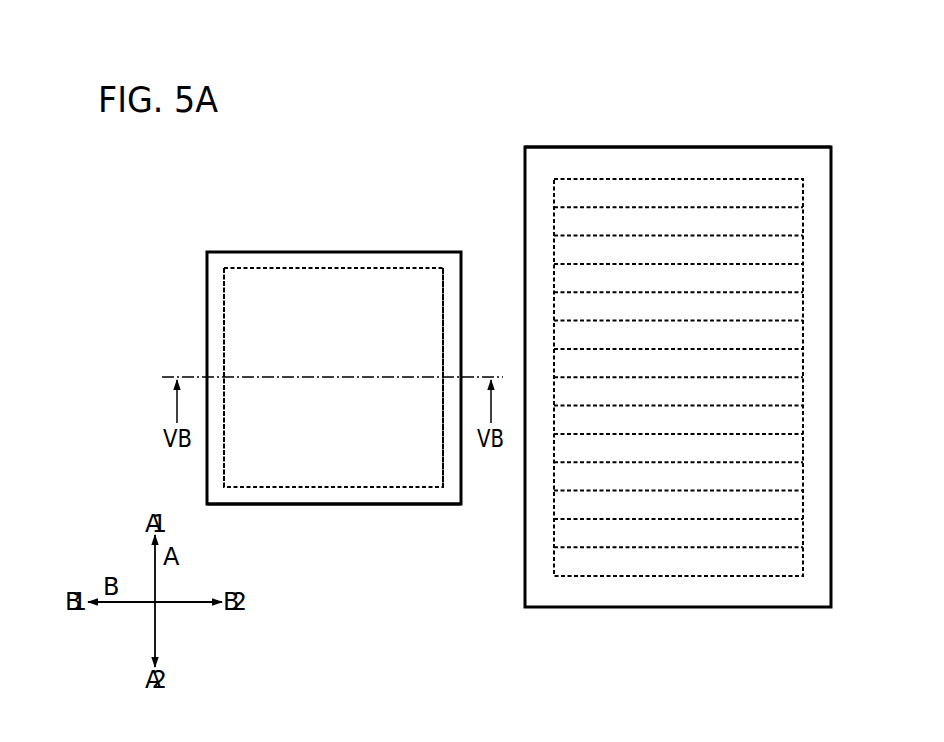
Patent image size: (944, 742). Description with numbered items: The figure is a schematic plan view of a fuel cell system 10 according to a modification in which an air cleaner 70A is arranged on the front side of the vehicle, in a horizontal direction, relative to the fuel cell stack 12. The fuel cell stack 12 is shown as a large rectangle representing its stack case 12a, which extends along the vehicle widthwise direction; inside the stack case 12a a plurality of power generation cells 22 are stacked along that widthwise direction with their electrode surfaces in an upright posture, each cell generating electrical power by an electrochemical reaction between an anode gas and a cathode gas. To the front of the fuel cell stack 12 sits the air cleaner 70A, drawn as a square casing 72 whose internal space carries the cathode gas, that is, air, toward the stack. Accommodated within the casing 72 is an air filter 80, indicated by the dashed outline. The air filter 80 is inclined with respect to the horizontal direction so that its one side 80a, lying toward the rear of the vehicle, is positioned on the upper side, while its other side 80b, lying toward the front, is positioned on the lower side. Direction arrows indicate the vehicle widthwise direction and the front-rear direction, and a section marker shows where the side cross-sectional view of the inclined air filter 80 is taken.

The fuel cell system 10 is at (366, 113).
The fuel cell stack 12 is at (623, 138).
The stack case 12a is at (715, 147).
The power generation cells 22 is at (570, 505).
The air cleaner 70A is at (285, 235).
The casing 72 is at (267, 505).
The air filter 80 is at (382, 262).
The one side of the air filter 80a is at (445, 305).
The other side of the air filter 80b is at (224, 307).